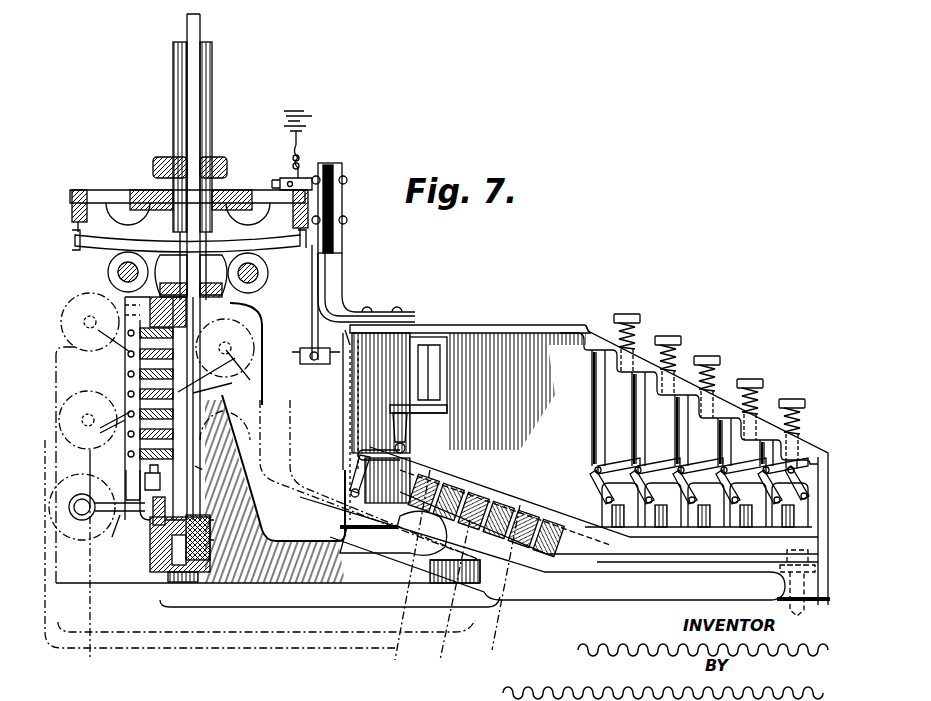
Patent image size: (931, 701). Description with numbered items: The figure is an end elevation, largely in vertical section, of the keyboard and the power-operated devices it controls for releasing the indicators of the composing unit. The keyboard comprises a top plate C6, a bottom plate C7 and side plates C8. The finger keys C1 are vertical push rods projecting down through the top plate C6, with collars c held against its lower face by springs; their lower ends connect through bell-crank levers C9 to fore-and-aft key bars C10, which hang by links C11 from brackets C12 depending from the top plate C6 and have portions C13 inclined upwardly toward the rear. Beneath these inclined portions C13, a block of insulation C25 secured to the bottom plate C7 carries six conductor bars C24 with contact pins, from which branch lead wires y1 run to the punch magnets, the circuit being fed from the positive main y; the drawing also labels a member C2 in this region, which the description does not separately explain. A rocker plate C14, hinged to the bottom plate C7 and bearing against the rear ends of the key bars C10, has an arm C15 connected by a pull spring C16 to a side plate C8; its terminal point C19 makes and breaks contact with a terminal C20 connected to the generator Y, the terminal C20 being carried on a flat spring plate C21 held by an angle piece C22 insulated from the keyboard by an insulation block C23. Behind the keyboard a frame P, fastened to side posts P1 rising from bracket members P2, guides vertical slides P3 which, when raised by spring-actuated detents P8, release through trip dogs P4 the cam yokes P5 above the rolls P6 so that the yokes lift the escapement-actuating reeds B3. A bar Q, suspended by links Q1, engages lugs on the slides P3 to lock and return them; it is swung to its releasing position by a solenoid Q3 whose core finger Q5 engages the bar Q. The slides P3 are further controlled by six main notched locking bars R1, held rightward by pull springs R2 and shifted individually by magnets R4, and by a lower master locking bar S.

The upright side posts P1 is at (210, 76).
The escapement actuating reeds B3 is at (187, 135).
The storage battery or generator Y is at (310, 112).
The positive main y is at (314, 142).
The insulation block C23 is at (340, 206).
The angle piece C22 is at (344, 296).
The flat spring metal plate C21 is at (312, 262).
The terminal C20 is at (312, 364).
The terminal point C19 is at (345, 330).
The integral arm C15 is at (410, 335).
The top plate C6 is at (528, 333).
The side plates C8 is at (575, 340).
The finger keys C1 is at (680, 345).
The collars or shoulders c is at (626, 372).
The bell-crank levers C9 is at (596, 478).
The key bars C10 is at (600, 527).
The brackets C12 is at (447, 402).
The links C11 is at (410, 450).
The rocker plate C14 is at (358, 470).
The pull spring C16 is at (380, 500).
The bar C2 is at (455, 470).
The inclined portions C13 is at (488, 480).
The conductor bars C24 is at (520, 497).
The block of insulation C25 is at (548, 552).
The bottom plate C7 is at (605, 562).
The branch lead wires y1 is at (410, 592).
The cam yokes P5 is at (98, 232).
The trip dogs P4 is at (125, 262).
The rolls P6 is at (108, 272).
The frame P is at (130, 365).
The vertical slides P3 is at (220, 385).
The fixed bracket members P2 is at (295, 541).
The spring-actuated detents P8 is at (210, 534).
The main notched locking bars R1 is at (140, 380).
The pull springs R2 is at (106, 432).
The magnets R4 is at (252, 352).
The bar Q is at (170, 515).
The links Q1 is at (152, 485).
The solenoid Q3 is at (82, 499).
The finger Q5 is at (117, 527).
The master or auxiliary notched locking bar S is at (126, 480).